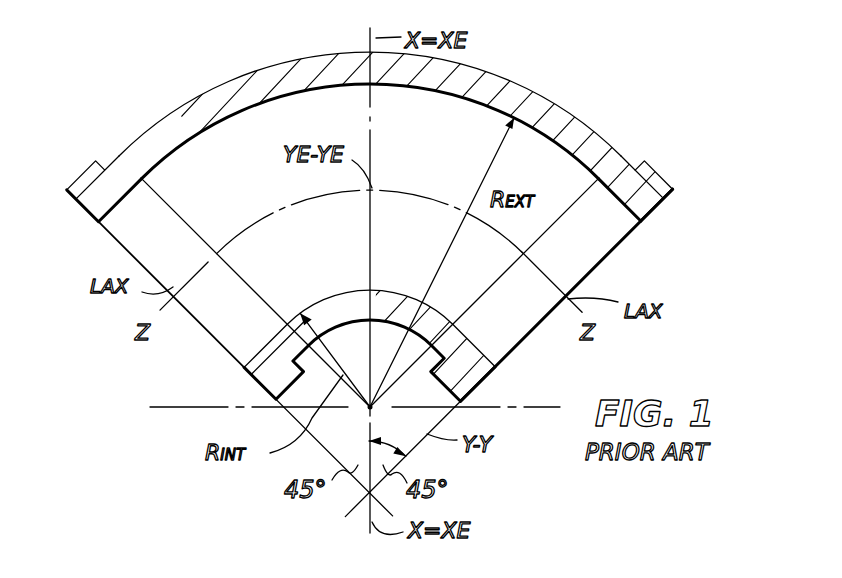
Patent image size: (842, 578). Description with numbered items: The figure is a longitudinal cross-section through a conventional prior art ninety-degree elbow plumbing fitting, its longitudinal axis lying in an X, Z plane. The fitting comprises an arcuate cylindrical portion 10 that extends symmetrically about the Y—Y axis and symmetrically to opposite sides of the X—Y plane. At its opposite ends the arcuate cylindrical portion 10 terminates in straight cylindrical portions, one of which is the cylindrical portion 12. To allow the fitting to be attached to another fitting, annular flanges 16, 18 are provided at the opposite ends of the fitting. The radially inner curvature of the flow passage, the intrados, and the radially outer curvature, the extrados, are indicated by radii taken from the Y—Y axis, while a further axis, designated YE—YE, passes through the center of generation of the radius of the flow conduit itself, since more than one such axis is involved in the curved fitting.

The arcuate cylindrical portion 10 is at (165, 120).
The cylindrical portion 12 is at (594, 243).
The annular flange 16 is at (645, 204).
The annular flange 18 is at (80, 173).